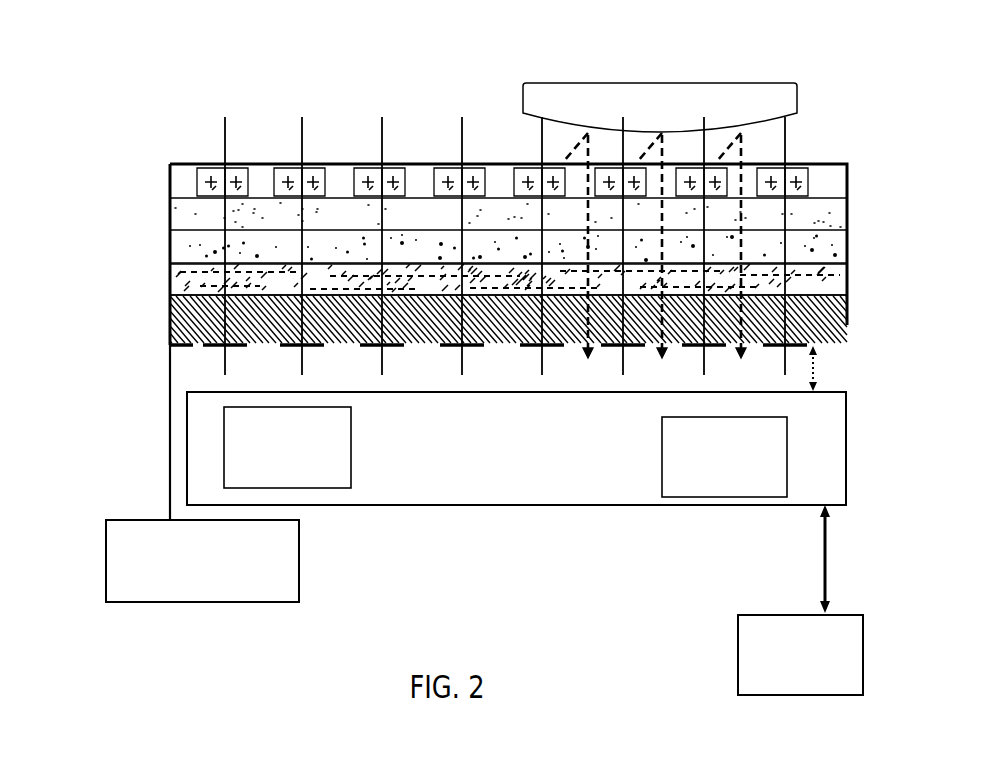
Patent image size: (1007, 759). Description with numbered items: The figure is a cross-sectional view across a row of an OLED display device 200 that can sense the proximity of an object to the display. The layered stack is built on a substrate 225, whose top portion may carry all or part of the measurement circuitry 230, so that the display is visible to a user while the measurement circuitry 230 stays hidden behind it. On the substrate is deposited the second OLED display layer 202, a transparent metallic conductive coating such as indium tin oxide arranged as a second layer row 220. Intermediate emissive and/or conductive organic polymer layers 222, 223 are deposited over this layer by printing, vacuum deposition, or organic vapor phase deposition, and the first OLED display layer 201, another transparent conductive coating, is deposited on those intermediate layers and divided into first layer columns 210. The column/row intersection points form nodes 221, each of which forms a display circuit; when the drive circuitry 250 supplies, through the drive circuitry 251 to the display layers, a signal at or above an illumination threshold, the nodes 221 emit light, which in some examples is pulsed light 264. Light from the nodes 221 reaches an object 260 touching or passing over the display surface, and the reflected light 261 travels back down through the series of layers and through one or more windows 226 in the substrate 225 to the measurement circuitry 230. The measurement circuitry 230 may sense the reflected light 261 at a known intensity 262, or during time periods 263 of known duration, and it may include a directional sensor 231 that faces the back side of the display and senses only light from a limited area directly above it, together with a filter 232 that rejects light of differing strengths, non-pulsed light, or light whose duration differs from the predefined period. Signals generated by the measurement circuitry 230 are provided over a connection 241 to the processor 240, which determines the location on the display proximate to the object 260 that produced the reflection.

The OLED display device 200 is at (206, 99).
The first OLED display layer 201 is at (194, 180).
The first layer columns 210 is at (400, 161).
The nodes 221 is at (302, 112).
The intermediate emissive and/or conductive organic polymer layer 222 is at (167, 216).
The intermediate emissive and/or conductive organic polymer layer 223 is at (167, 247).
The second OLED display layer 202 is at (167, 278).
The second layer row 220 is at (455, 297).
The substrate 225 is at (167, 310).
The windows 226 is at (188, 352).
The drive circuitry to the display layers 251 is at (167, 420).
The drive circuitry 250 is at (183, 585).
The measurement circuitry 230 is at (502, 452).
The filter 232 is at (327, 454).
The directional sensor 231 is at (772, 481).
The processor 240 is at (780, 678).
The connection 241 is at (814, 546).
The object 260 is at (656, 111).
The reflected light 261 is at (758, 148).
The known intensity 262 is at (760, 220).
The pulsed light 264 is at (761, 310).
The time period t0 263 is at (854, 54).